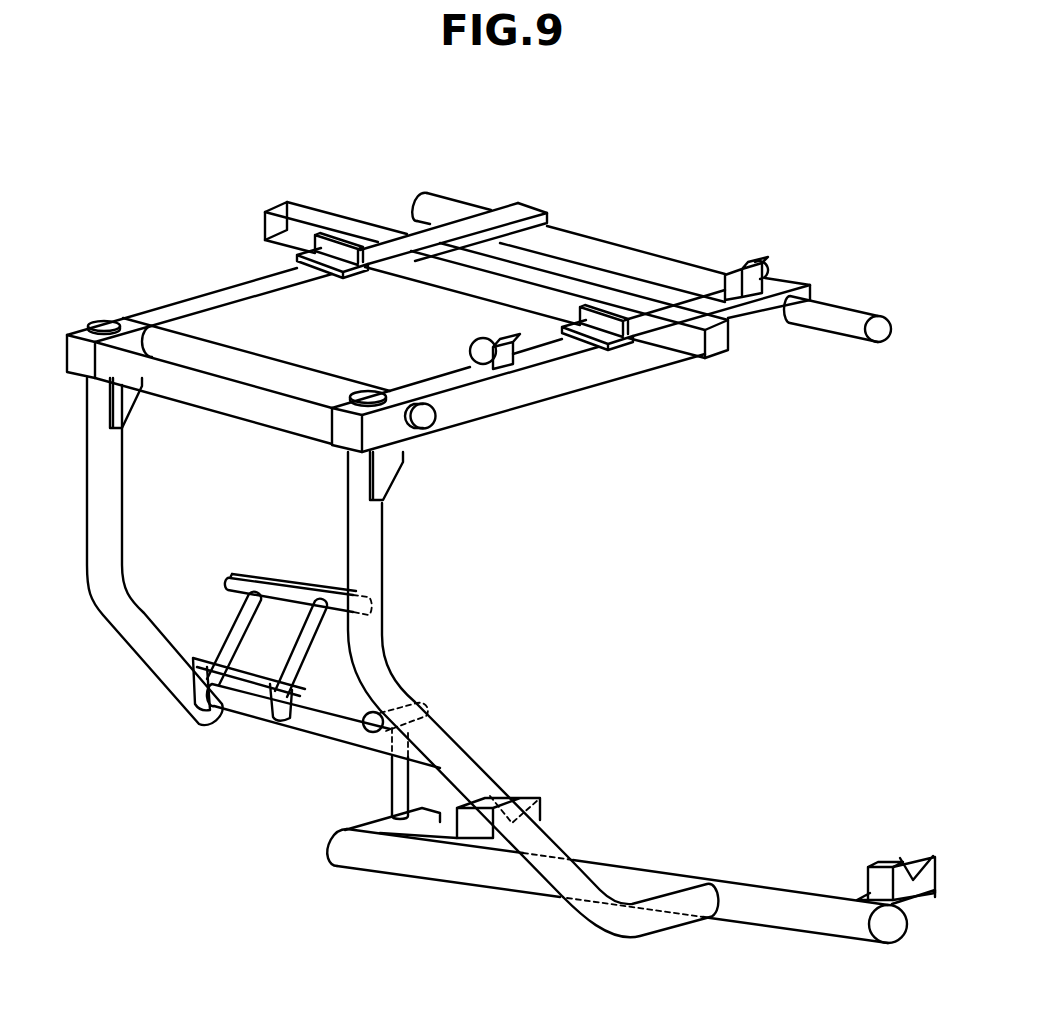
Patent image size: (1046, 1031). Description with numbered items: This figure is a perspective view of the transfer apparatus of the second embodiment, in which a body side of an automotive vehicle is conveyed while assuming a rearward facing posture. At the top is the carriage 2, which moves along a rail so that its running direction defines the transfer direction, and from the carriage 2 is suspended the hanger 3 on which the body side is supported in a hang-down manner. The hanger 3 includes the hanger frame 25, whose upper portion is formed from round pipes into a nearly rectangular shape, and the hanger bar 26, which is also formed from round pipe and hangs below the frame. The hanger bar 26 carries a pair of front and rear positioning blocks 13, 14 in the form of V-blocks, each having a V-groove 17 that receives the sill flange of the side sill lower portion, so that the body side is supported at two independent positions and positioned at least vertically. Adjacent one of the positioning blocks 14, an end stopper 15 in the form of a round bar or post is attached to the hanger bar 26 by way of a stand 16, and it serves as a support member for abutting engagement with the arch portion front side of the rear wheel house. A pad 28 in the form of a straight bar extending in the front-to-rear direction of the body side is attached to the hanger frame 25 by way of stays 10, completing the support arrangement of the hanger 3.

The carriage 2 is at (612, 388).
The hanger 3 is at (412, 659).
The stays 10 is at (235, 640).
The positioning block 13 is at (869, 877).
The positioning block 14 is at (470, 827).
The end stopper 15 is at (362, 718).
The stand 16 is at (399, 777).
The V-groove 17 is at (506, 792).
The hanger frame 25 is at (152, 680).
The hanger bar 26 is at (510, 875).
The pad 28 is at (290, 578).